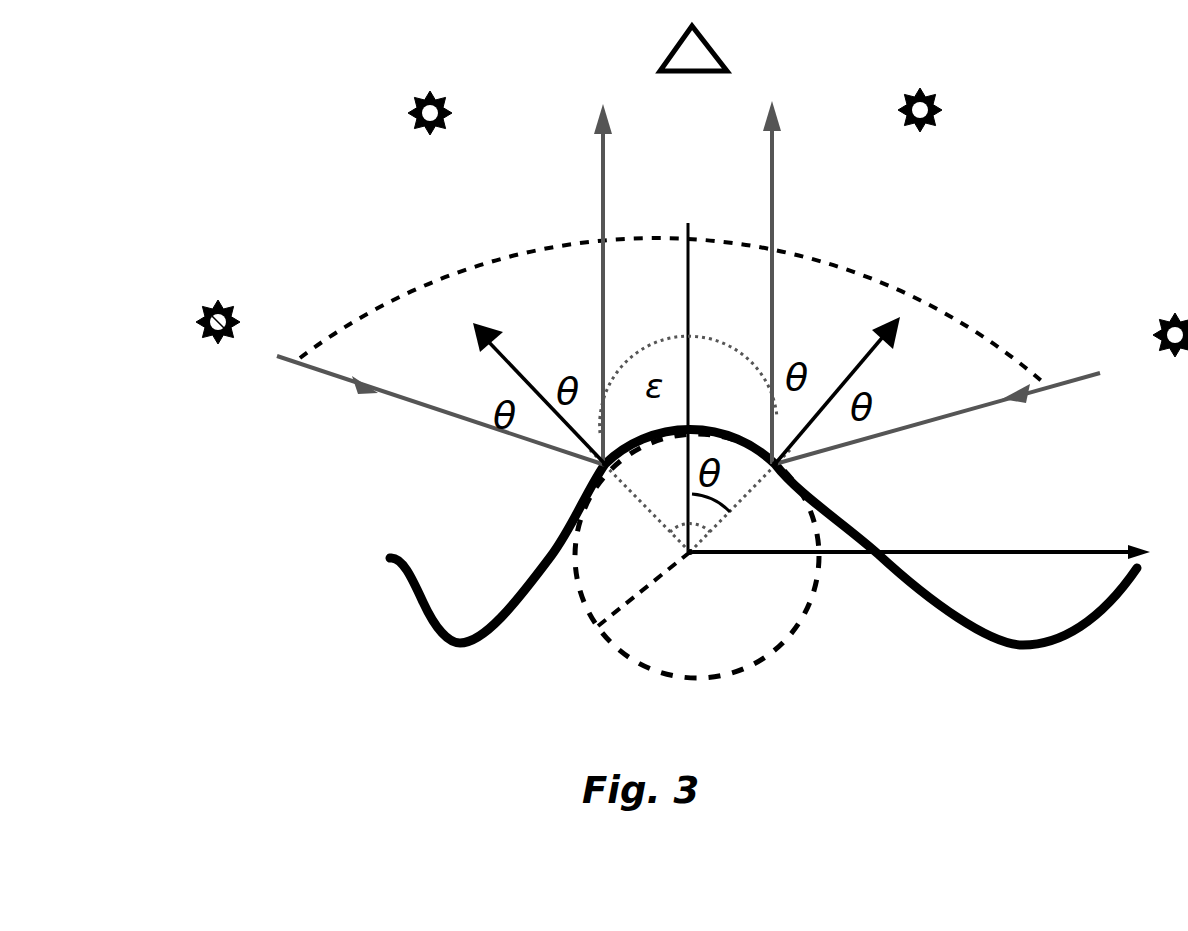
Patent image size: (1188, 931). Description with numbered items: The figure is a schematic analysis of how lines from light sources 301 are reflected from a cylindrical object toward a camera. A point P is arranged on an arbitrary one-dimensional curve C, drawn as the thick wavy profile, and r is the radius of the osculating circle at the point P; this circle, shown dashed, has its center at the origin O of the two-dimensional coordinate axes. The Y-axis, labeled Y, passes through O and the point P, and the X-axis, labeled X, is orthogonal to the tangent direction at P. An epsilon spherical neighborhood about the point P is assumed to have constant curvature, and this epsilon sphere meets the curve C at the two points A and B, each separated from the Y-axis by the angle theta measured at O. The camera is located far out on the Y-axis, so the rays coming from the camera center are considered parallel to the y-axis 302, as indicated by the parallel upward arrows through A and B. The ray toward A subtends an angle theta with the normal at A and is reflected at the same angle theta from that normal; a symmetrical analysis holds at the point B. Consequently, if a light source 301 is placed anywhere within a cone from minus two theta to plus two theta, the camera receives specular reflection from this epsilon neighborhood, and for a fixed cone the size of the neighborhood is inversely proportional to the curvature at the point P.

The light sources 301 is at (226, 316).
The y-axis 302 is at (684, 355).
The point A is at (802, 472).
The point B is at (582, 482).
The curve C is at (763, 537).
The center of the osculating circle O is at (705, 573).
The point P is at (703, 412).
The X-axis X is at (920, 533).
The Y-axis Y is at (668, 387).
The radius of the osculating circle r is at (644, 594).